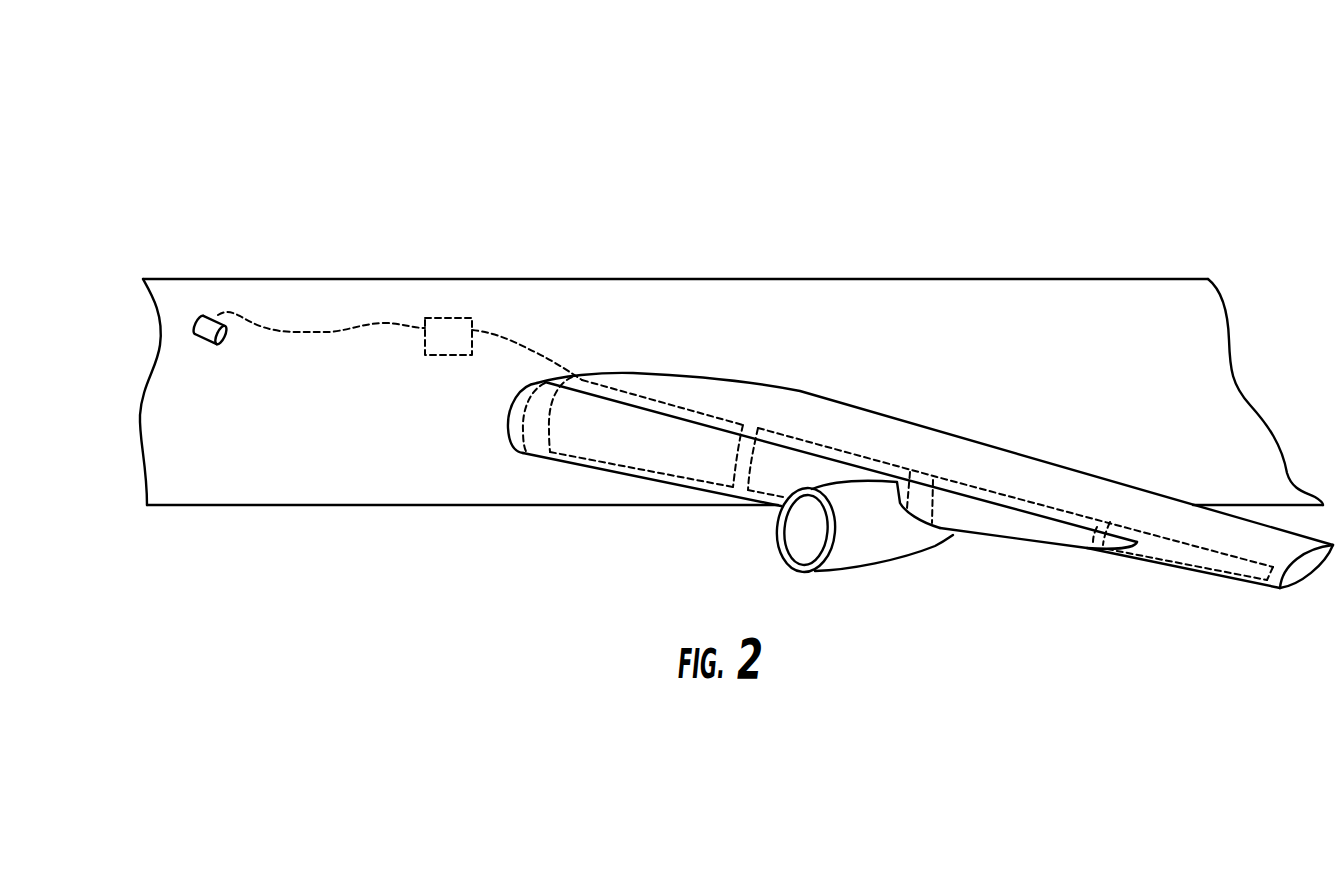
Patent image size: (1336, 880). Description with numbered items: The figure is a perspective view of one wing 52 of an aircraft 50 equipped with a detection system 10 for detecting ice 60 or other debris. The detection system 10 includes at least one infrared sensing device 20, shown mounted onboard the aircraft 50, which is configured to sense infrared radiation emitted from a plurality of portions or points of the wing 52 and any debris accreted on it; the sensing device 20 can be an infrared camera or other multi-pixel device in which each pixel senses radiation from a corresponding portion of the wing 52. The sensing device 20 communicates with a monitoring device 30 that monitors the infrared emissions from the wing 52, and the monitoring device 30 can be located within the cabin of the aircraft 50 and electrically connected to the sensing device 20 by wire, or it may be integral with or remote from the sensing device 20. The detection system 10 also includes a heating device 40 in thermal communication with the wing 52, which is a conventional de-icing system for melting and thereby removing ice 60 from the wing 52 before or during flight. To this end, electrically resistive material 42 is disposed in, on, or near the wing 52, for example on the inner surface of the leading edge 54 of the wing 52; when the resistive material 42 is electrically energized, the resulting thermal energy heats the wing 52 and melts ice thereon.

The detection system 10 is at (425, 143).
The infrared sensing device 20 is at (203, 315).
The monitoring device 30 is at (455, 318).
The heating device 40 is at (686, 407).
The electrically resistive material 42 is at (642, 470).
The aircraft 50 is at (797, 278).
The wing 52 is at (865, 423).
The leading edge 54 is at (1108, 565).
The ice 60 is at (508, 442).